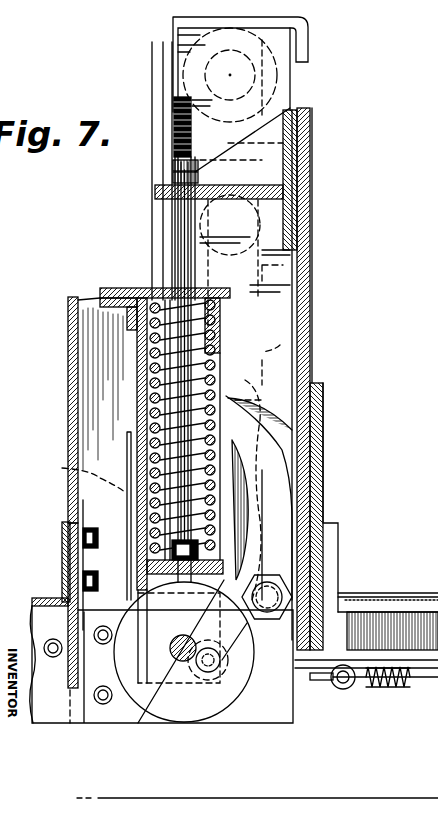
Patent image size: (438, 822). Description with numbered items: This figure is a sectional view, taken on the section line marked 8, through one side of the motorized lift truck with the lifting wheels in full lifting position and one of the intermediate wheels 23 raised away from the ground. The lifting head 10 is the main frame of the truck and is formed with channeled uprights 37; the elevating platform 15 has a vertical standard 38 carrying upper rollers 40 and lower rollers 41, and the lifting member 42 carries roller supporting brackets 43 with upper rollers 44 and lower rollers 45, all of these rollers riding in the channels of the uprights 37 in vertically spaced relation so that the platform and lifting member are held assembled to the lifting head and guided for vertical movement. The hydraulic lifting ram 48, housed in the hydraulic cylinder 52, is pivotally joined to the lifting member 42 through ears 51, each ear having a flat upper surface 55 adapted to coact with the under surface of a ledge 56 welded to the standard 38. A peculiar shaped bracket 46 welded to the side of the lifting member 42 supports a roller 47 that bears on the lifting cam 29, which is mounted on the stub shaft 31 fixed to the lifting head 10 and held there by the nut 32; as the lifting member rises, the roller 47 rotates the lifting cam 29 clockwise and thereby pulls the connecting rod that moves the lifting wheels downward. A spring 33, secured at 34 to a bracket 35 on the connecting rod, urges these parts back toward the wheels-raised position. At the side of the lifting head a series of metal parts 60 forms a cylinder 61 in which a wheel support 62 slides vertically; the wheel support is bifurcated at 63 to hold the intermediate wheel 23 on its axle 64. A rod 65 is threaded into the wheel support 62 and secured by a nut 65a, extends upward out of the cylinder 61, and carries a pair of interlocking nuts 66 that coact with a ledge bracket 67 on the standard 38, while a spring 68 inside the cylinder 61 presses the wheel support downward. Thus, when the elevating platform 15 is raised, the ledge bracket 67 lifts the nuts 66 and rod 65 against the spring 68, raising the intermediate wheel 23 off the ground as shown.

The section line 8- 8 is at (185, 270).
The lifting head 10 is at (44, 724).
The elevating platform 15 is at (312, 351).
The intermediate wheel 23 is at (218, 702).
The lifting cam 29 is at (310, 473).
The stub shaft 31 is at (285, 591).
The nut 32 is at (290, 574).
The spring 33 is at (383, 690).
The securing point 34 is at (345, 690).
The bracket 35 is at (320, 678).
The channeled upright 37 is at (292, 82).
The vertical standard 38 is at (305, 294).
The upper roller 40 is at (297, 237).
The lower roller 41 is at (310, 504).
The lifting member 42 is at (150, 162).
The roller supporting bracket 43 is at (275, 74).
The upper roller 44 is at (280, 110).
The lower roller 45 is at (300, 371).
The bracket 46 is at (138, 495).
The roller 47 is at (72, 469).
The lifting ram 48 is at (297, 261).
The ear 51 is at (297, 209).
The hydraulic cylinder 52 is at (300, 349).
The flat upper surface 55 is at (176, 155).
The ledge 56 is at (176, 104).
The metal parts 60 is at (150, 379).
The cylinder 61 is at (148, 354).
The wheel support 62 is at (148, 556).
The bifurcation 63 is at (185, 588).
The axle 64 is at (160, 690).
The rod 65 is at (178, 118).
The nut 65a is at (168, 547).
The interlocking nuts 66 is at (173, 177).
The ledge bracket 67 is at (158, 192).
The spring 68 is at (127, 452).